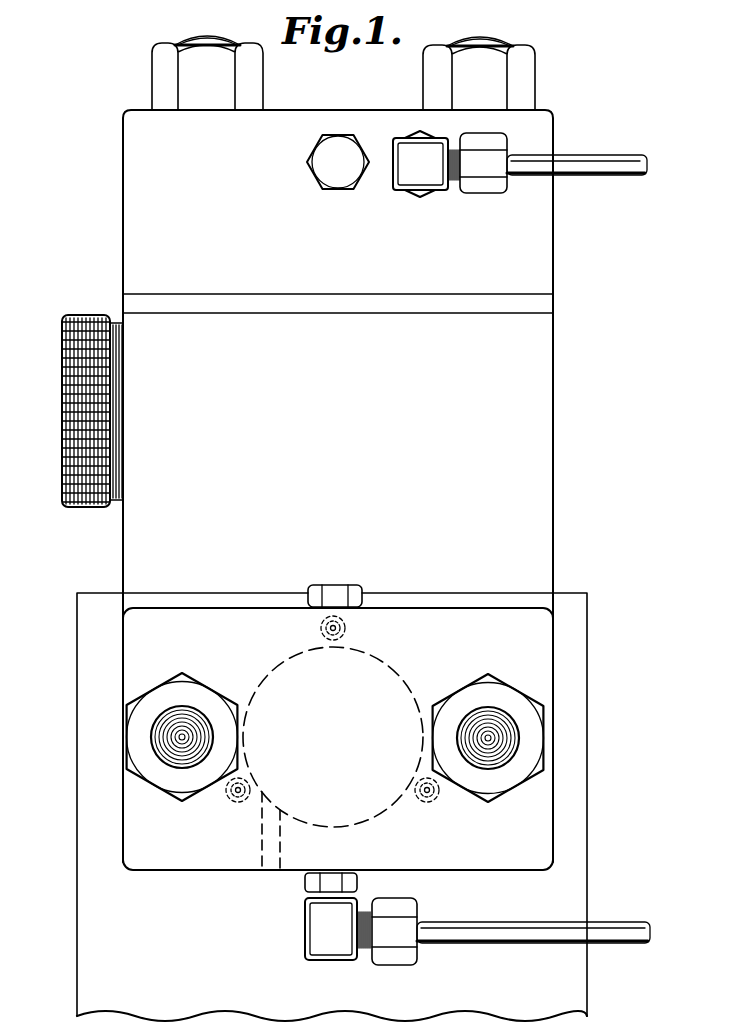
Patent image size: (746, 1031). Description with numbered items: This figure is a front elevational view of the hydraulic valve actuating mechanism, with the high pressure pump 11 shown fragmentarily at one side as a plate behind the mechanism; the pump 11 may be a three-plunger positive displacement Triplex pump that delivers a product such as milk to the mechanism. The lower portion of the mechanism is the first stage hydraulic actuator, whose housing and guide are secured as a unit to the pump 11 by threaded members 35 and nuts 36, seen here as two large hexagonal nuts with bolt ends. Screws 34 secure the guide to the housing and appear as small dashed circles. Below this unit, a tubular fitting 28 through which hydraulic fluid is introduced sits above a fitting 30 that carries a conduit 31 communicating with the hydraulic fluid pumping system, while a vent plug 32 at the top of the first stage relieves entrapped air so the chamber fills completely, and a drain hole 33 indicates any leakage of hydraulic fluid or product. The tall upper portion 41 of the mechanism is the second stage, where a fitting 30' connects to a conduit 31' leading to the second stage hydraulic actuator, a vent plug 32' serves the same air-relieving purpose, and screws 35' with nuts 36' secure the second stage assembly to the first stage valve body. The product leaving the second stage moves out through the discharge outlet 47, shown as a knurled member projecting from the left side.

The high pressure pump 11 is at (90, 892).
The tubular fitting 28 is at (307, 883).
The fitting 30 is at (358, 947).
The fitting 30' is at (450, 180).
The conduit 31 is at (533, 919).
The conduit 31' is at (577, 153).
The vent plug 32 is at (340, 580).
The vent plug 32' is at (338, 177).
The drain hole 33 is at (268, 842).
The screws 34 is at (355, 628).
The threaded members 35 is at (282, 753).
The screws 35' is at (373, 43).
The nuts 36 is at (338, 737).
The nuts 36' is at (364, 76).
The valve body 41 is at (530, 416).
The discharge outlet 47 is at (60, 458).